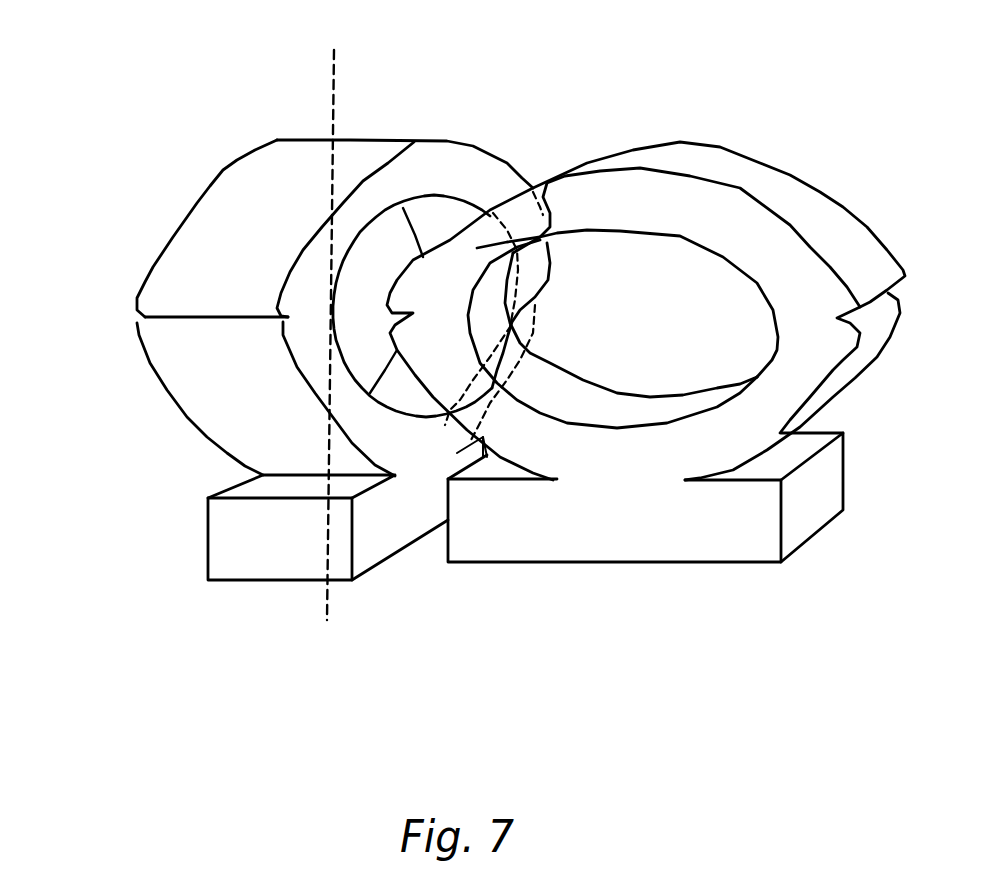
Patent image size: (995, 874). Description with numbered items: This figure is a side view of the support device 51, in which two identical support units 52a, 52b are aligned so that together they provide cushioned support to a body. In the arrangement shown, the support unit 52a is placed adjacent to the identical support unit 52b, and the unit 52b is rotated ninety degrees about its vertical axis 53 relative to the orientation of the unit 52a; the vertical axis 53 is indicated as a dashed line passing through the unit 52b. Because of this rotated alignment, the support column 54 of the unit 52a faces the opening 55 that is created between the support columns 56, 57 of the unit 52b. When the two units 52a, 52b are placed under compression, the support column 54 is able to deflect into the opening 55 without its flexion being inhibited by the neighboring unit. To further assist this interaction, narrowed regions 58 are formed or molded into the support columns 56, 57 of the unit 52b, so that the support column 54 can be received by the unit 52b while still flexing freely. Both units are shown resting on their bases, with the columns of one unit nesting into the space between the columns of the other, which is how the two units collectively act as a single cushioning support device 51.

The support device 51 is at (503, 320).
The support unit 52a is at (664, 291).
The support unit 52b is at (312, 259).
The vertical axis 53 is at (363, 330).
The support column 54 is at (631, 250).
The opening 55 is at (352, 306).
The support column 56 is at (311, 229).
The support column 57 is at (418, 130).
The narrowed region 58 is at (176, 339).